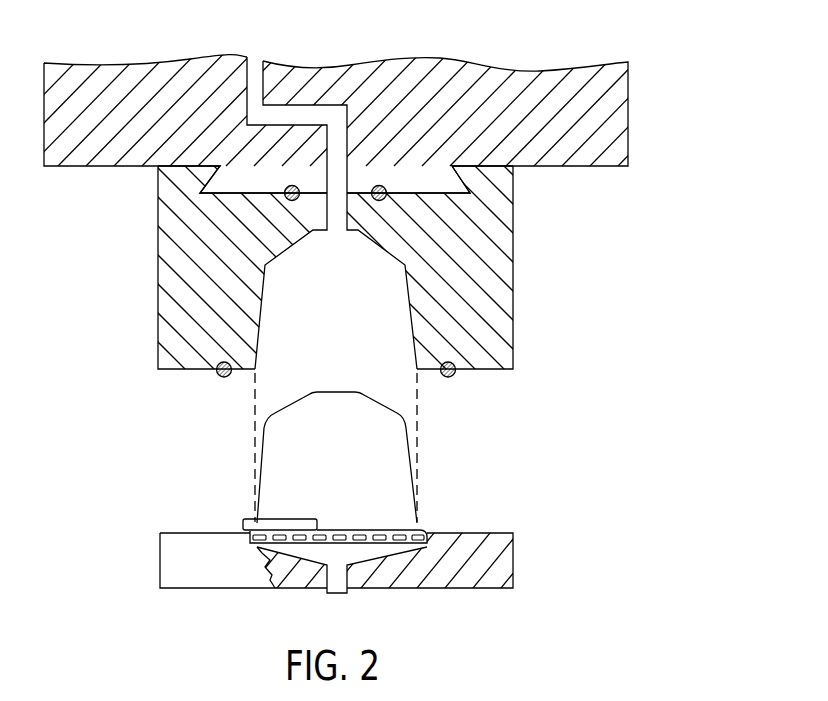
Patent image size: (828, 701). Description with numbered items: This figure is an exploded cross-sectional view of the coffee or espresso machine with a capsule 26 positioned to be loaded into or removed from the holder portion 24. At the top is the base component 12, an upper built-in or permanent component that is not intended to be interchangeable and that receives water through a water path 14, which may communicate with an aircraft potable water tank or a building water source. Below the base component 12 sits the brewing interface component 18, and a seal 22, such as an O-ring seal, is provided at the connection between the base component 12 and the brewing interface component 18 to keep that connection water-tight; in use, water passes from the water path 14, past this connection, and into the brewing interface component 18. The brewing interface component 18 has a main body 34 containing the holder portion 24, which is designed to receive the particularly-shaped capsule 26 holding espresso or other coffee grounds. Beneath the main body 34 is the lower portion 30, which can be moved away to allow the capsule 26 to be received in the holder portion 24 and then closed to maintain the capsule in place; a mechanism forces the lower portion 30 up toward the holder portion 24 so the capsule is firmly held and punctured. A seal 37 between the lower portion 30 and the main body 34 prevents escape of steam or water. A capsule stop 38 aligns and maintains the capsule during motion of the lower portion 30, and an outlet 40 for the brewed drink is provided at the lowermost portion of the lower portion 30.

The base component 12 is at (557, 95).
The water path 14 is at (283, 103).
The brewing interface component 18 is at (513, 275).
The seal 22 is at (381, 186).
The holder portion 24 is at (349, 316).
The capsule 26 is at (405, 453).
The lower portion 30 is at (513, 552).
The main body 34 is at (183, 238).
The seal 37 is at (217, 376).
The capsule stop 38 is at (243, 526).
The outlet 40 is at (343, 588).